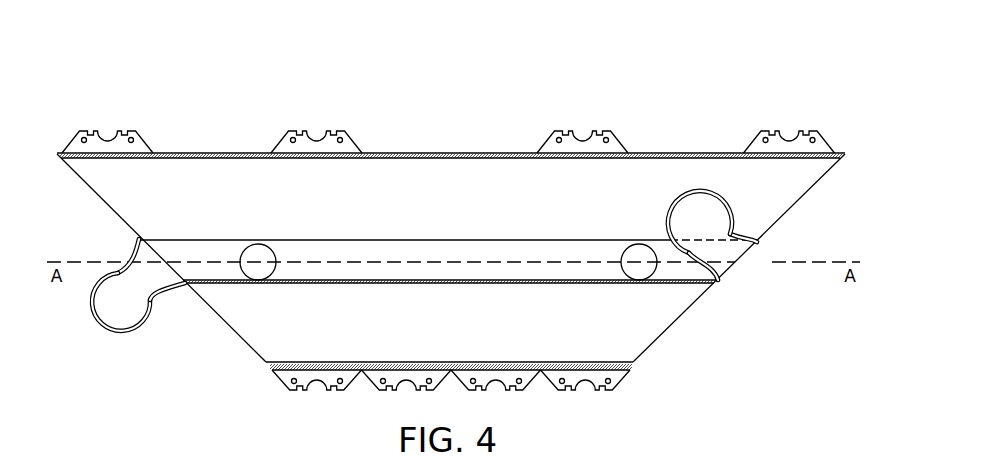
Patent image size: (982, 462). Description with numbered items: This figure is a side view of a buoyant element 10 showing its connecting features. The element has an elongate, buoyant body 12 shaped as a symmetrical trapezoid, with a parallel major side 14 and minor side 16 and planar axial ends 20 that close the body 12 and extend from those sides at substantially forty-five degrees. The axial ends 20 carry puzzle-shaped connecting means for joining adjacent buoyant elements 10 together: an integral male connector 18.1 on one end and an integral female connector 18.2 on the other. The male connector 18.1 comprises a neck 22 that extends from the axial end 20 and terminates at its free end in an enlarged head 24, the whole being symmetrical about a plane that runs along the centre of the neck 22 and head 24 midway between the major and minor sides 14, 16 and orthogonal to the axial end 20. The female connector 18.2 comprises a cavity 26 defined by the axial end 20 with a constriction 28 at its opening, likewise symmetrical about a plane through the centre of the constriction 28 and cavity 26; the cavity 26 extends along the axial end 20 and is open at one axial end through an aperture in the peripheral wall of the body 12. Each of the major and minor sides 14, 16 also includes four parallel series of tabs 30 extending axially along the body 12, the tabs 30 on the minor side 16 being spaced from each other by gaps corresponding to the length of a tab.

The buoyant element 10 is at (666, 69).
The buoyant body 12 is at (451, 268).
The major side 14 is at (441, 152).
The minor side 16 is at (528, 371).
The male connector 18.1 is at (114, 300).
The female connector 18.2 is at (754, 204).
The planar axial end 20 is at (224, 328).
The neck 22 is at (130, 257).
The enlarged head 24 is at (118, 300).
The cavity 26 is at (697, 212).
The constriction 28 is at (728, 248).
The tab 30 is at (296, 136).